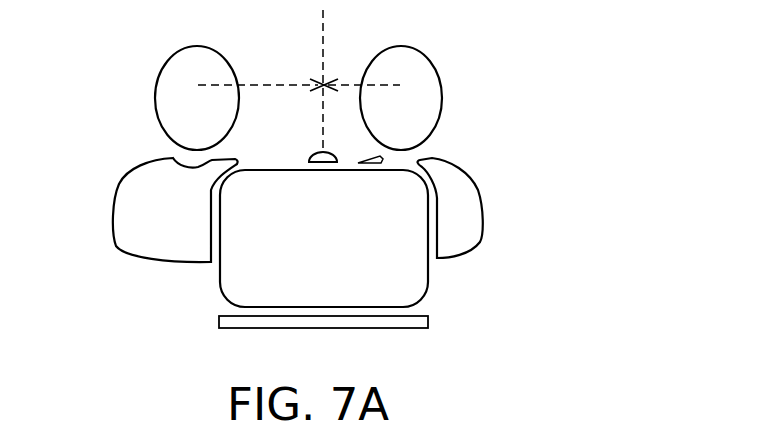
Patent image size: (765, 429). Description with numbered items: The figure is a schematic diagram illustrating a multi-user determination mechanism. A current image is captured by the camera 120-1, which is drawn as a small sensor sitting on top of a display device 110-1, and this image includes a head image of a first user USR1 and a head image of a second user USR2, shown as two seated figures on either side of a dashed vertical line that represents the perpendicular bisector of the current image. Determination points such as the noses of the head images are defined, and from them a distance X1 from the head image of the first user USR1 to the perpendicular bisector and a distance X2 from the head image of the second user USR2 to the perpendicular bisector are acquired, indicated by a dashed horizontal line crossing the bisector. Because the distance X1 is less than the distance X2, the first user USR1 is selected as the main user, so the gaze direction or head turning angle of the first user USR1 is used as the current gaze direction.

The first user USR1 is at (435, 62).
The second user USR2 is at (157, 85).
The distance X1 is at (364, 66).
The distance X2 is at (258, 68).
The camera 120-1 is at (312, 158).
The display device 110-1 is at (218, 278).